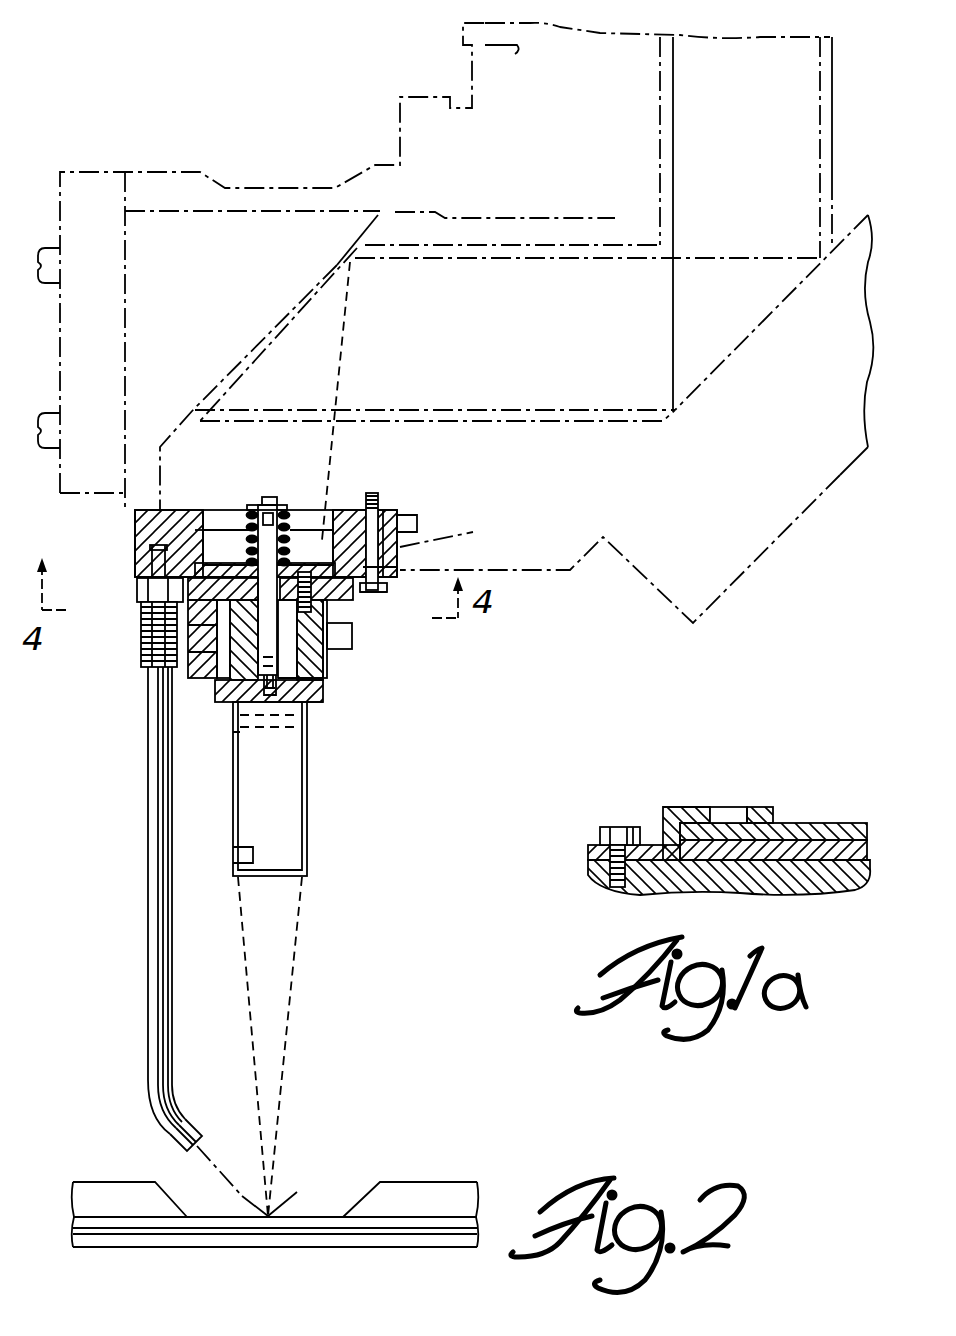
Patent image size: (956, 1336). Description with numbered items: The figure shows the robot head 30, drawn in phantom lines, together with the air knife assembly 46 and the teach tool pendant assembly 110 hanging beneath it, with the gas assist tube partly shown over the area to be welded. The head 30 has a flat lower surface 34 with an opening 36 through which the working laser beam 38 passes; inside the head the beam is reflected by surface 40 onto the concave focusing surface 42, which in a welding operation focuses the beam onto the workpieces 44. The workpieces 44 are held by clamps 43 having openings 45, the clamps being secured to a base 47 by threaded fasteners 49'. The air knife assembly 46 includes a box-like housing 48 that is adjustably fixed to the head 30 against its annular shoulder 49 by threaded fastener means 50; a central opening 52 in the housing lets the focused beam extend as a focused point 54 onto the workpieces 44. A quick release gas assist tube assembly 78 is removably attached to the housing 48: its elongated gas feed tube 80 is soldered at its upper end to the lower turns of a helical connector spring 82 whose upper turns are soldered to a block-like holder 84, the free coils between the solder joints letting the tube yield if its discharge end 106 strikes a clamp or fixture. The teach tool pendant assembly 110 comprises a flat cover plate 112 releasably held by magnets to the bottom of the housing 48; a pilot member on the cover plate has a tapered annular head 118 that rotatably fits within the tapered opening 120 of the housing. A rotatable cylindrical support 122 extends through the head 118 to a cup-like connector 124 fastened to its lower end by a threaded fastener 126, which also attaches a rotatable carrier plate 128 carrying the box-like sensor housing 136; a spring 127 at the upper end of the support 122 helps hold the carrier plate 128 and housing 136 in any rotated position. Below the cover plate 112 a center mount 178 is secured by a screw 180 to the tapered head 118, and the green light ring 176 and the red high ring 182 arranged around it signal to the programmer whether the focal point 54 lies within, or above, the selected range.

In FIG. 2, the head 30 is at (250, 195).
In FIG. 2, the working laser beam 38 is at (810, 125).
In FIG. 2, the reflecting surface 40 is at (716, 358).
In FIG. 2, the concave focusing surface 42 is at (299, 303).
In FIG. 2, the opening 36 is at (218, 553).
In FIG. 2, the red lighted high ring 182 is at (193, 553).
In FIG. 2, the spring 127 is at (237, 530).
In FIG. 2, the tapered annular head 118 is at (302, 563).
In FIG. 2, the screw 180 is at (320, 530).
In FIG. 2, the central opening 52 is at (322, 540).
In FIG. 2, the flat lower surface 34 is at (400, 515).
In FIG. 2, the annular shoulder 49 is at (454, 523).
In FIG. 2, the air knife assembly 46 is at (131, 520).
In FIG. 2, the air knife housing 48 is at (135, 560).
In FIG. 2, the holder 84 is at (140, 588).
In FIG. 2, the helical connector spring 82 is at (145, 636).
In FIG. 2, the gas assist tube assembly 78 is at (113, 658).
In FIG. 2, the green light ring 176 is at (197, 642).
In FIG. 2, the center mount 178 is at (213, 685).
In FIG. 2, the teach tool pendant assembly 110 is at (367, 668).
In FIG. 2, the cover plate 112 is at (338, 600).
In FIG. 2, the tapered opening 120 is at (337, 600).
In FIG. 2, the threaded fastener means 50 is at (374, 592).
In FIG. 2, the cylindrical support 122 is at (243, 700).
In FIG. 2, the threaded fastener 126 is at (270, 696).
In FIG. 2, the carrier plate 128 is at (290, 683).
In FIG. 2, the cup like connector 124 is at (301, 721).
In FIG. 2, the sensor housing 136 is at (307, 806).
In FIG. 2, the gas feed tube 80 is at (155, 965).
In FIG. 2, the discharge end 106 is at (202, 1140).
In FIG. 2, the focused point 54 is at (297, 1192).
In FIG. 2, the work pieces 44 is at (437, 1222).
In FIG. 1A, the work pieces 44 is at (850, 848).
In FIG. 1A, the base 47 is at (808, 882).
In FIG. 1A, the clamps 43 is at (670, 815).
In FIG. 1A, the openings 45 is at (727, 815).
In FIG. 1A, the threaded fasteners 49' is at (606, 828).